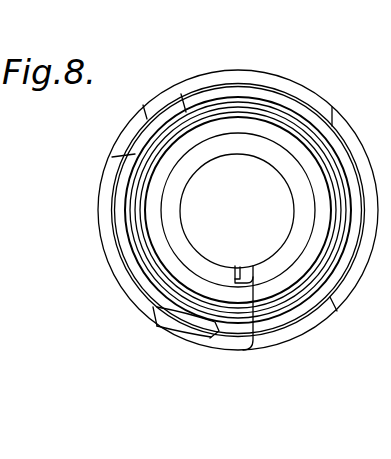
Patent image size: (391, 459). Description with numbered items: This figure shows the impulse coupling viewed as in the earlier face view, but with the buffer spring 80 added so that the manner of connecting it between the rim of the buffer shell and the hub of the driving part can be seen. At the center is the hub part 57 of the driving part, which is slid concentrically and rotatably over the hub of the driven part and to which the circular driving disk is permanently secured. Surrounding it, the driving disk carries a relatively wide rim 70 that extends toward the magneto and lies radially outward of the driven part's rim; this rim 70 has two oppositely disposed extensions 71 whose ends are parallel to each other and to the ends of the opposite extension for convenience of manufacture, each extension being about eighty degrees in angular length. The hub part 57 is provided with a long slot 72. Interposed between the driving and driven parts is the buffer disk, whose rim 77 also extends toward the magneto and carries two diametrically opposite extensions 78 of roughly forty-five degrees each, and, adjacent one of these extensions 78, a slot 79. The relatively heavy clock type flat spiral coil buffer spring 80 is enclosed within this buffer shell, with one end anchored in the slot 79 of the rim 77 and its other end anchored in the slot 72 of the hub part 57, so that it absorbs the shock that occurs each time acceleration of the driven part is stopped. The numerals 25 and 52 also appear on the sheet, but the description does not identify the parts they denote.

The lens mount 25 is at (10, 123).
The inner ring 52 is at (149, 211).
The hub part 57 is at (228, 146).
The rim 70 is at (274, 75).
The extensions 71 is at (343, 125).
The long slot 72 is at (258, 347).
The rim 77 is at (298, 107).
The extensions 78 is at (167, 109).
The slot 79 is at (212, 335).
The buffer spring 80 is at (153, 315).